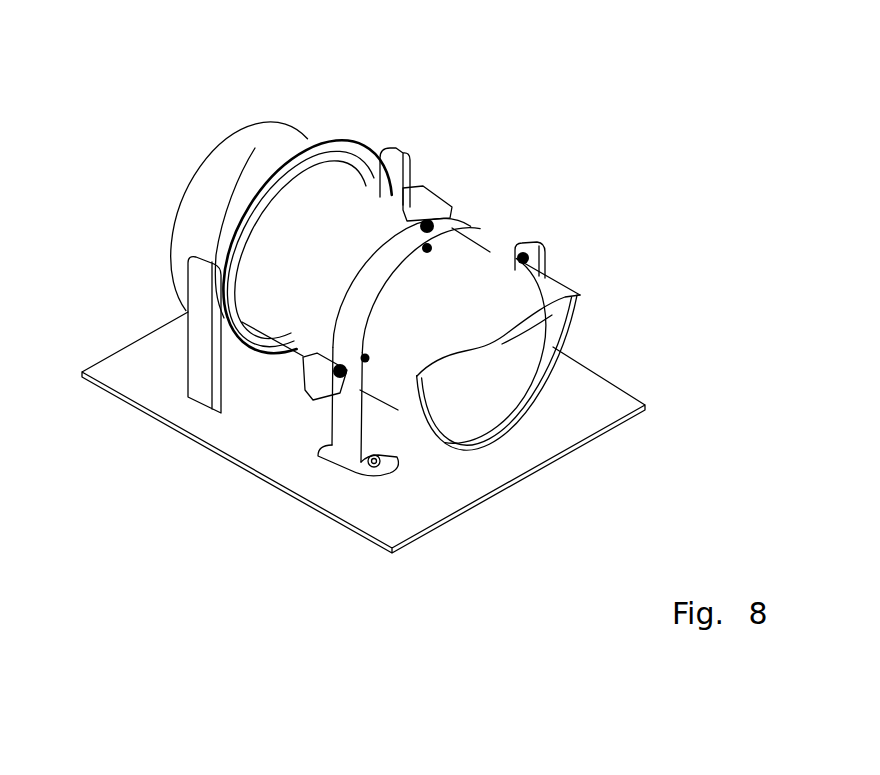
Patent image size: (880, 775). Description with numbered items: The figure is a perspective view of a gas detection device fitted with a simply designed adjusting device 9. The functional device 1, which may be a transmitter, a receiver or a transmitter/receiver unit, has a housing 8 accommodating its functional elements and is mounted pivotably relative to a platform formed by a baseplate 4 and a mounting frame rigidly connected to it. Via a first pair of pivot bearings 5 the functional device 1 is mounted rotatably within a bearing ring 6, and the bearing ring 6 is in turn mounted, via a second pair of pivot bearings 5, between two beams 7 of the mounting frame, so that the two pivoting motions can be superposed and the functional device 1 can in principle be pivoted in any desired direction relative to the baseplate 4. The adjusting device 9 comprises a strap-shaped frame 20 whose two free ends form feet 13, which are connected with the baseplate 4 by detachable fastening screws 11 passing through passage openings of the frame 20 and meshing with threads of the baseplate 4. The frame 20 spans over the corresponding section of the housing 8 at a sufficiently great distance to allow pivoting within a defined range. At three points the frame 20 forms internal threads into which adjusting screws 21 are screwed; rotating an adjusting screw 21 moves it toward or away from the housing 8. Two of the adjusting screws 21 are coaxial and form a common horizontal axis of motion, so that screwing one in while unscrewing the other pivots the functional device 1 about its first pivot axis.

The functional device 1 is at (540, 326).
The baseplate 4 is at (600, 400).
The pivot bearings 5 is at (226, 297).
The bearing ring 6 is at (324, 141).
The beams 7 is at (397, 168).
The housing 8 is at (332, 205).
The adjusting device 9 is at (282, 381).
The fastening screws 11 is at (381, 463).
The feet 13 is at (359, 490).
The strap-shaped frame 20 is at (347, 432).
The adjusting screws 21 is at (534, 243).